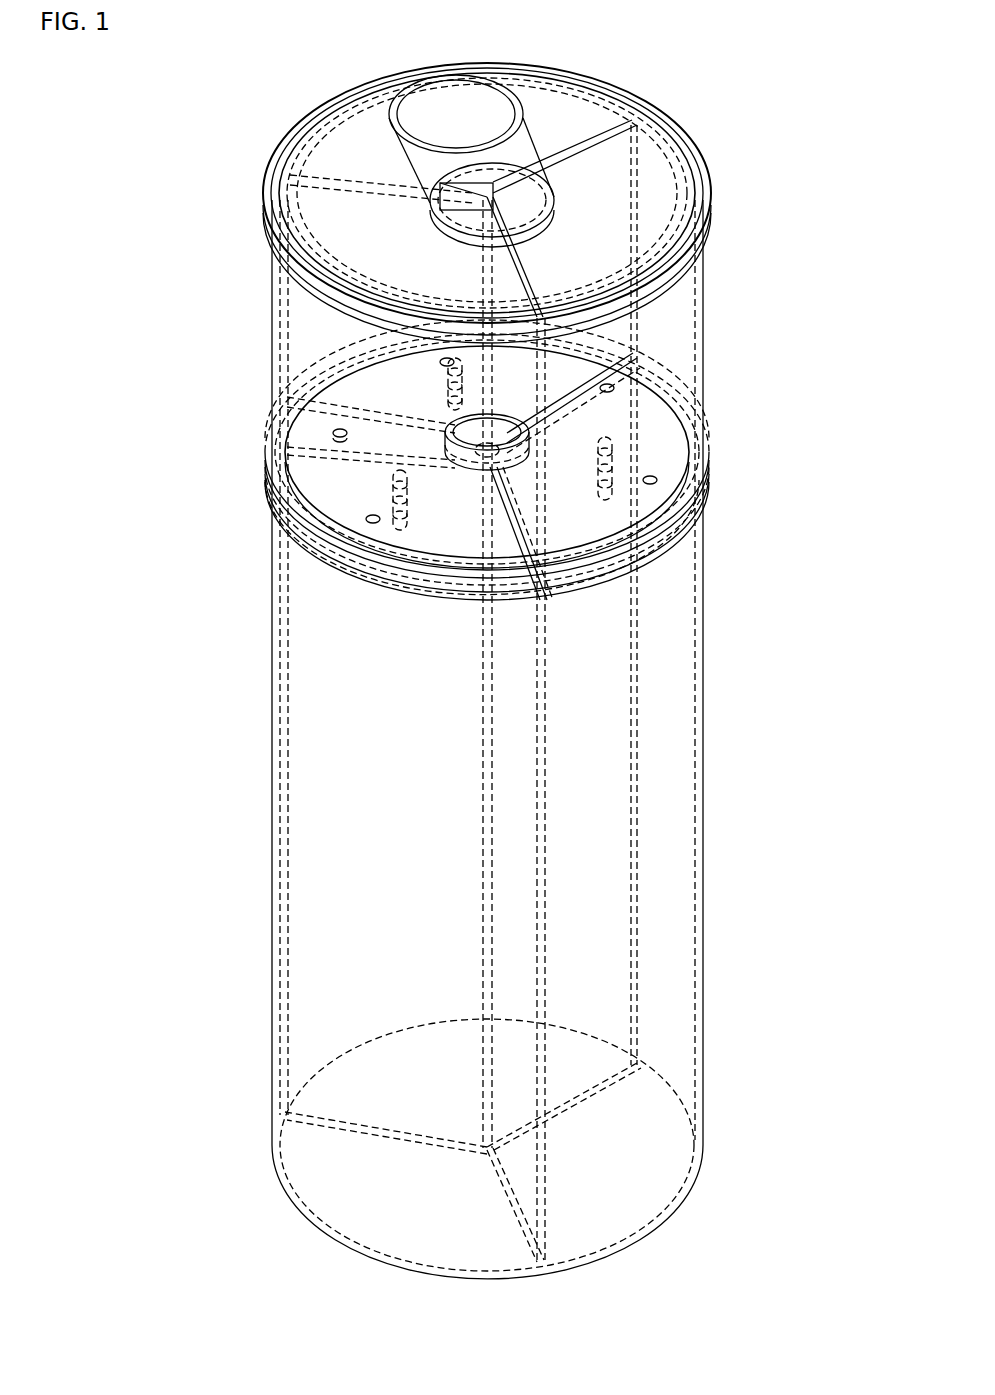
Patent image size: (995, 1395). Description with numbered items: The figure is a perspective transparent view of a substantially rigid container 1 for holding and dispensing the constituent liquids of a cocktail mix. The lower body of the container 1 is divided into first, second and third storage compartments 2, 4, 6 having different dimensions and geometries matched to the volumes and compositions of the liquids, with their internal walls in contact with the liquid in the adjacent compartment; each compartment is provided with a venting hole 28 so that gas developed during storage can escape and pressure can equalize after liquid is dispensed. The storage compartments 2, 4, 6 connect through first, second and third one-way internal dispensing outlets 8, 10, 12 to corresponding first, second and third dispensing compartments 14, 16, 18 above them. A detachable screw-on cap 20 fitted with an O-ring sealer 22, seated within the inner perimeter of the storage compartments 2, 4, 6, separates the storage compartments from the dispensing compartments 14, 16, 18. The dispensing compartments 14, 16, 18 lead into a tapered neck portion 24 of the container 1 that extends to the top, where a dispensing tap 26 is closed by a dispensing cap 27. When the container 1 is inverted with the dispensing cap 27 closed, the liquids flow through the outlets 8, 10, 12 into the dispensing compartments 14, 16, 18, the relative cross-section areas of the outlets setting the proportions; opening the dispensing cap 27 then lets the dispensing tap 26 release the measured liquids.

The container 1 is at (514, 702).
The first storage compartment 2 is at (529, 1212).
The second storage compartment 4 is at (560, 693).
The third storage compartment 6 is at (432, 1145).
The first one-way internal dispensing outlet 8 is at (705, 441).
The second one-way internal dispensing outlet 10 is at (292, 362).
The third one-way internal dispensing outlet 12 is at (266, 508).
The first dispensing compartment 14 is at (471, 177).
The second dispensing compartment 16 is at (439, 203).
The third dispensing compartment 18 is at (412, 193).
The detachable screw-on cap 20 is at (543, 533).
The O-ring sealer 22 is at (542, 449).
The tapered neck portion 24 is at (547, 672).
The dispensing tap 26 is at (588, 153).
The dispensing cap 27 is at (535, 107).
The venting hole 28 is at (414, 454).